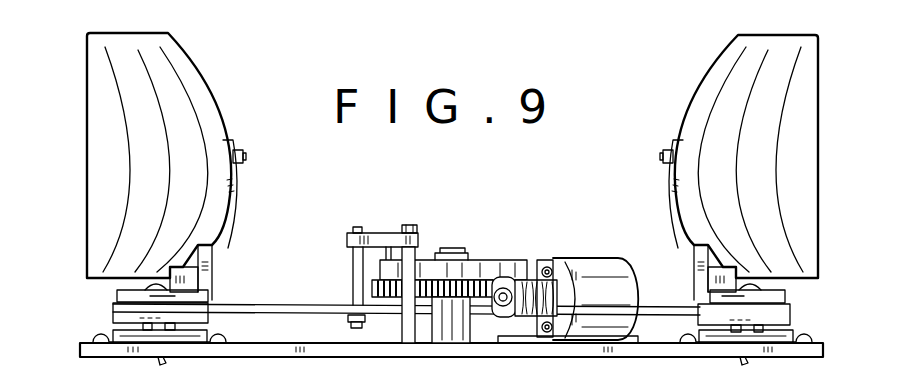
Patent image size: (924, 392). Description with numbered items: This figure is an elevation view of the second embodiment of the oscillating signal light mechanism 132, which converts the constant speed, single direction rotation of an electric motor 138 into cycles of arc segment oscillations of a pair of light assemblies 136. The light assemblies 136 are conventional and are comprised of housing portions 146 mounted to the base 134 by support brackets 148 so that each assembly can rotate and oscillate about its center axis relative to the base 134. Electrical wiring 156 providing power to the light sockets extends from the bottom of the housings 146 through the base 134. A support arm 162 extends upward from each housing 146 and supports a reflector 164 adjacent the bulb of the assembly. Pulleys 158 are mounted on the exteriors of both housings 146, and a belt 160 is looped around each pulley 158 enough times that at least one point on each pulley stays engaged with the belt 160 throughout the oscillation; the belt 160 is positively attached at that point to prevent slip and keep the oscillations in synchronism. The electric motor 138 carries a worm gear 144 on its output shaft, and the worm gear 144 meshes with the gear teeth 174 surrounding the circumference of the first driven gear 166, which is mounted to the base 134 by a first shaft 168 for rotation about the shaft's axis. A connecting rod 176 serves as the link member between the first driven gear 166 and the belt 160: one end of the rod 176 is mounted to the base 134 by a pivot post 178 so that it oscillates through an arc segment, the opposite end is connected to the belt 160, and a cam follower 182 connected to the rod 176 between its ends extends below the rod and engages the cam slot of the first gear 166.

The oscillating signal light mechanism 132 is at (536, 172).
The base 134 is at (302, 345).
The light assemblies 136 is at (236, 100).
The electric motor 138 is at (613, 287).
The worm gear 144 is at (557, 278).
The housing portions 146 is at (222, 297).
The support brackets 148 is at (113, 333).
The electrical wiring 156 is at (157, 362).
The pulleys 158 is at (117, 304).
The belt 160 is at (270, 306).
The support arm 162 is at (230, 197).
The reflector 164 is at (164, 77).
The first driven gear 166 is at (488, 280).
The first shaft 168 is at (453, 247).
The gear teeth 174 is at (490, 268).
The connecting rod 176 is at (356, 232).
The pivot post 178 is at (406, 323).
The cam follower 182 is at (389, 232).